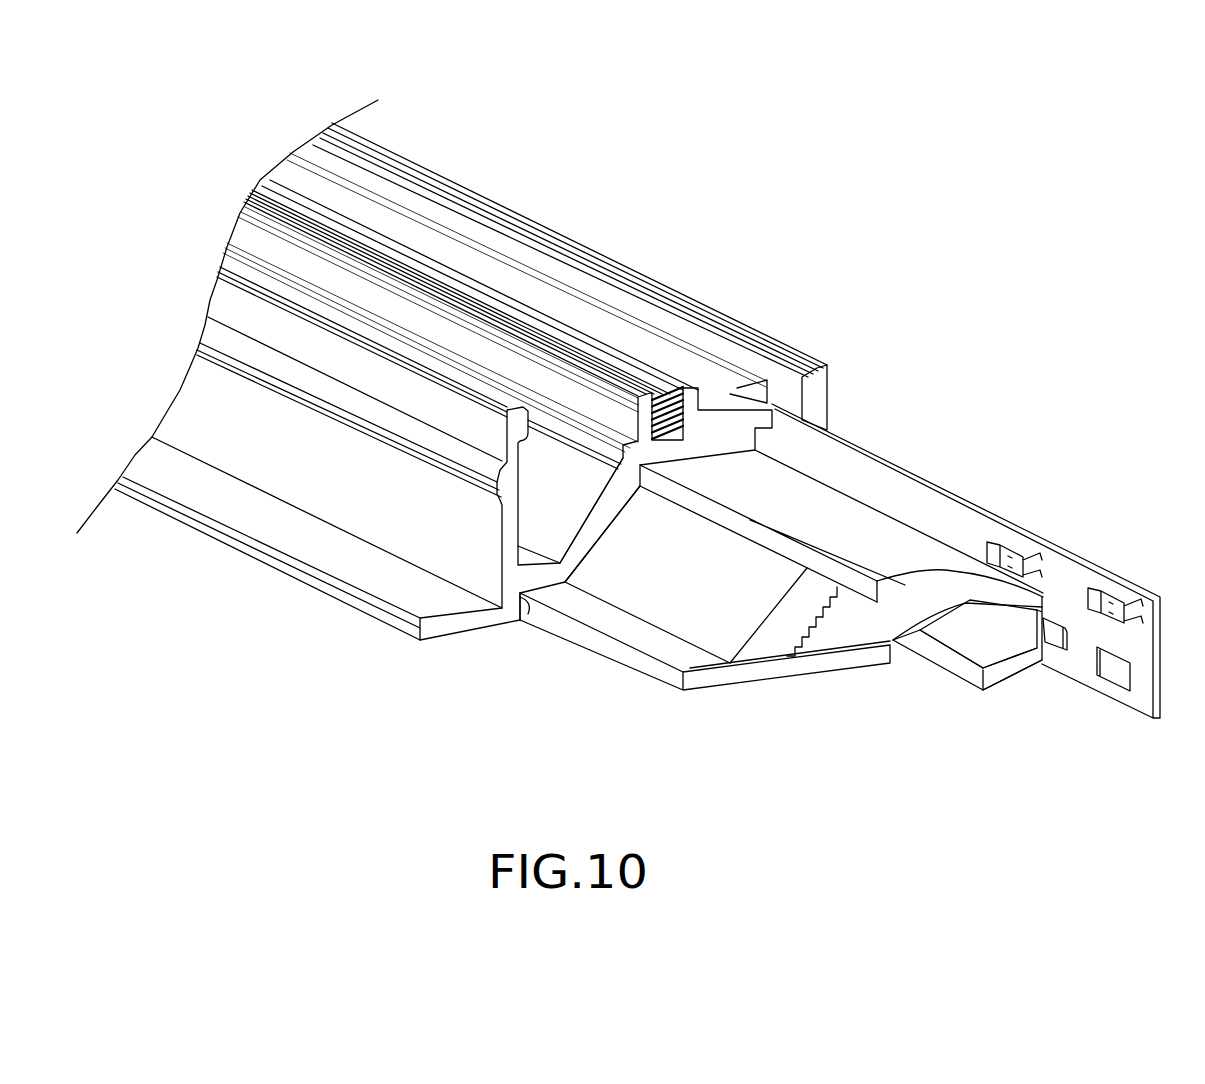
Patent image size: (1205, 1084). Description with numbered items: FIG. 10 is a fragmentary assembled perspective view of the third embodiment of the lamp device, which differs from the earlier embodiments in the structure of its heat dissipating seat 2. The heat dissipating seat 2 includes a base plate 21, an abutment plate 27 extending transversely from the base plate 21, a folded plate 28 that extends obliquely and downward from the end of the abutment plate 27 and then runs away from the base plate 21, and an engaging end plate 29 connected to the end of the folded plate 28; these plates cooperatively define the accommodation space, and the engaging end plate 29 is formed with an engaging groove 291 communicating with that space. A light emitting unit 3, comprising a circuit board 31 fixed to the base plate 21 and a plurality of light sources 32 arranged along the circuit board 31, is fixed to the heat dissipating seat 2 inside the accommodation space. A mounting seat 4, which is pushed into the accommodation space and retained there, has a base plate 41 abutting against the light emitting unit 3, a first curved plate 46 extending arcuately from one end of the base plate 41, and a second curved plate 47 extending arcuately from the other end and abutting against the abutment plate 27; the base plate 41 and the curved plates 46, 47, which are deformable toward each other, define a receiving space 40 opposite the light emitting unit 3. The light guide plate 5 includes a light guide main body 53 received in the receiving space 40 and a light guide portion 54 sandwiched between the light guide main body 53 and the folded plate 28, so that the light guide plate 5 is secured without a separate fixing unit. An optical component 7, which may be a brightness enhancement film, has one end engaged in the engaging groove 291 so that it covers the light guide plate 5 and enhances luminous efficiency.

The heat dissipating seat 2 is at (597, 198).
The base plate 21 is at (830, 391).
The abutment plate 27 is at (670, 456).
The folded plate 28 is at (577, 580).
The engaging end plate 29 is at (355, 513).
The engaging groove 291 is at (522, 600).
The light emitting unit 3 is at (978, 492).
The circuit board 31 is at (1085, 575).
The light source 32 is at (1113, 668).
The mounting seat 4 is at (960, 694).
The receiving space 40 is at (941, 652).
The base plate 41 is at (1058, 630).
The first curved plate 46 is at (1005, 647).
The second curved plate 47 is at (1000, 592).
The light guide plate 5 is at (660, 620).
The light guide main body 53 is at (820, 640).
The light guide portion 54 is at (757, 648).
The optical component 7 is at (770, 681).